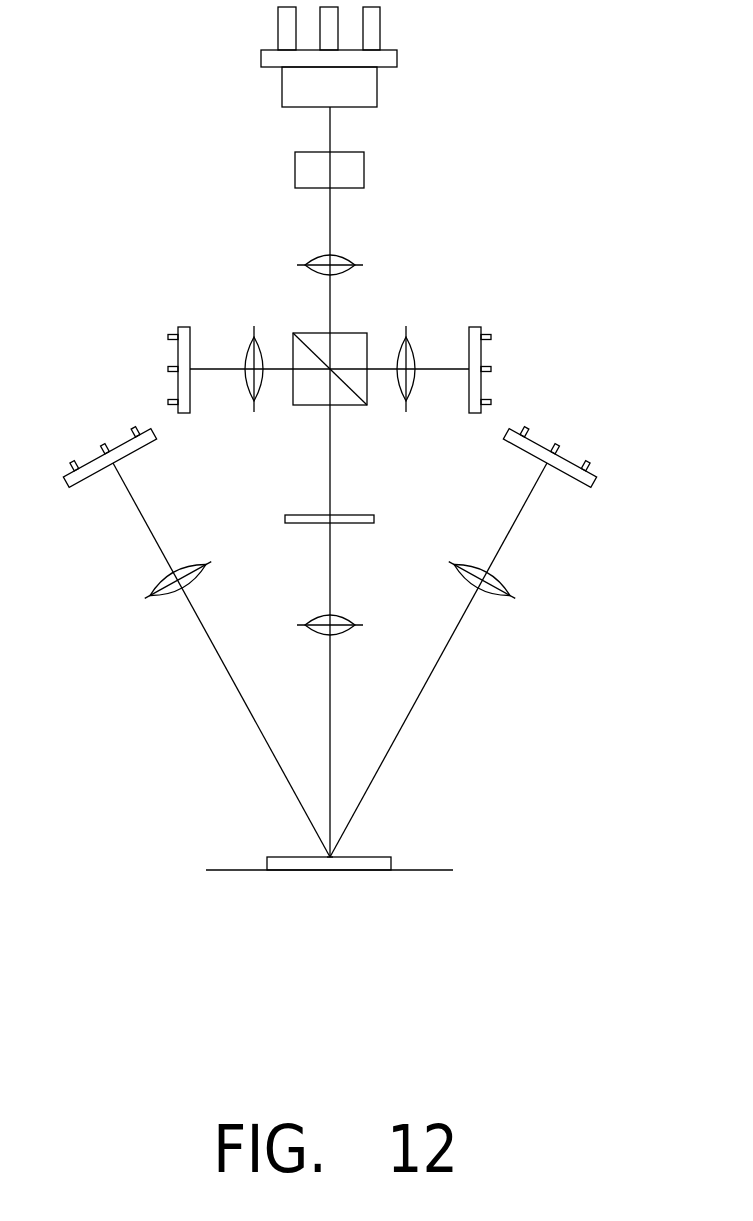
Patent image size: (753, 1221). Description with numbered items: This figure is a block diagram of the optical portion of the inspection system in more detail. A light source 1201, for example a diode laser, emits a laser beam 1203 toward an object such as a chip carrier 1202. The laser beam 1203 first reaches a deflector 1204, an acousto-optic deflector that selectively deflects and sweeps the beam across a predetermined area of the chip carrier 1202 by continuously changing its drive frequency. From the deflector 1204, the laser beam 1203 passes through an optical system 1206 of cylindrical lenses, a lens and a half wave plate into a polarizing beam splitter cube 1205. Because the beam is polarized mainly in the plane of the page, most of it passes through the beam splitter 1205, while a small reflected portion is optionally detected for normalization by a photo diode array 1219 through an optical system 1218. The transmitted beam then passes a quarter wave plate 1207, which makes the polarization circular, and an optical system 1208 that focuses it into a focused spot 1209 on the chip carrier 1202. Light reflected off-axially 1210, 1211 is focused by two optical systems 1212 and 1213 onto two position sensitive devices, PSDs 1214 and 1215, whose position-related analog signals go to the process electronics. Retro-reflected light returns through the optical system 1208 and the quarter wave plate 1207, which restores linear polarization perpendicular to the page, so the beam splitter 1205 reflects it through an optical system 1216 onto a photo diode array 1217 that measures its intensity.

The light source 1201 is at (392, 68).
The chip carrier 1202 is at (403, 847).
The laser beam 1203 is at (330, 127).
The deflector 1204 is at (364, 170).
The polarizing beam splitter cube 1205 is at (366, 346).
The optical system 1206 is at (352, 270).
The quarter wave plate 1207 is at (374, 519).
The optical system 1208 is at (370, 603).
The focused spot 1209 is at (330, 870).
The off-axially reflected light 1210 is at (232, 688).
The off-axially reflected light 1211 is at (428, 687).
The optical system 1212 is at (160, 574).
The optical system 1213 is at (500, 580).
The PSD 1214 is at (63, 468).
The PSD 1215 is at (594, 470).
The optical system 1216 is at (248, 390).
The photo diode array 1217 is at (178, 351).
The optical system 1218 is at (410, 392).
The photo diode array 1219 is at (490, 374).